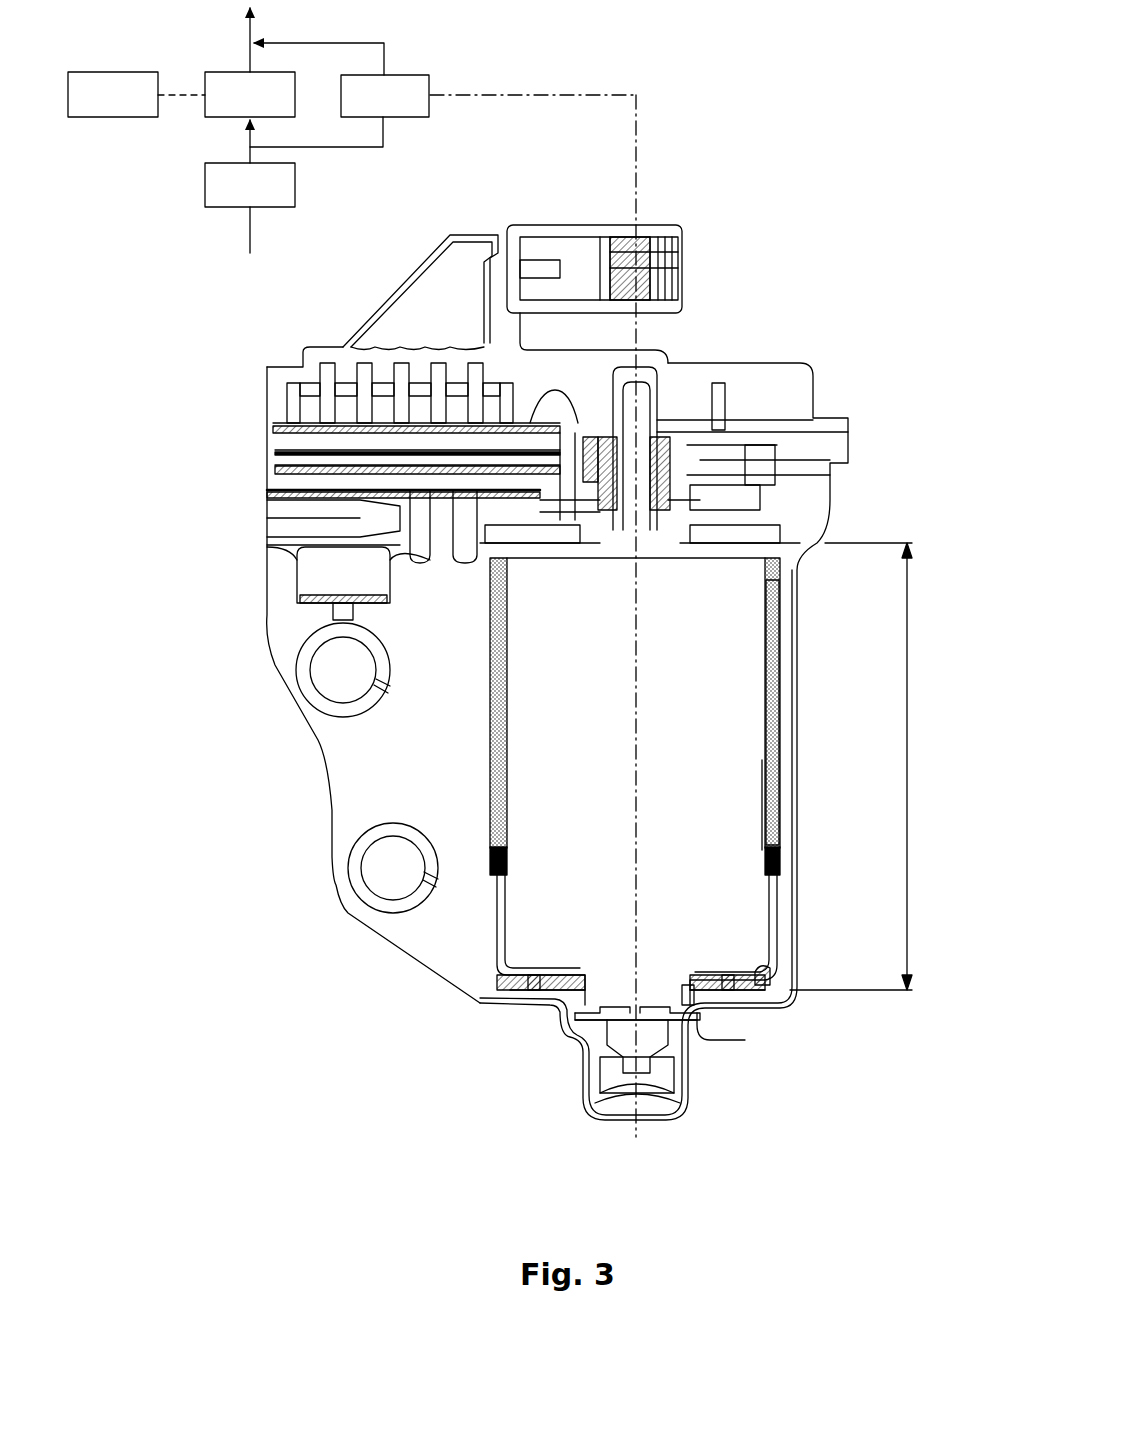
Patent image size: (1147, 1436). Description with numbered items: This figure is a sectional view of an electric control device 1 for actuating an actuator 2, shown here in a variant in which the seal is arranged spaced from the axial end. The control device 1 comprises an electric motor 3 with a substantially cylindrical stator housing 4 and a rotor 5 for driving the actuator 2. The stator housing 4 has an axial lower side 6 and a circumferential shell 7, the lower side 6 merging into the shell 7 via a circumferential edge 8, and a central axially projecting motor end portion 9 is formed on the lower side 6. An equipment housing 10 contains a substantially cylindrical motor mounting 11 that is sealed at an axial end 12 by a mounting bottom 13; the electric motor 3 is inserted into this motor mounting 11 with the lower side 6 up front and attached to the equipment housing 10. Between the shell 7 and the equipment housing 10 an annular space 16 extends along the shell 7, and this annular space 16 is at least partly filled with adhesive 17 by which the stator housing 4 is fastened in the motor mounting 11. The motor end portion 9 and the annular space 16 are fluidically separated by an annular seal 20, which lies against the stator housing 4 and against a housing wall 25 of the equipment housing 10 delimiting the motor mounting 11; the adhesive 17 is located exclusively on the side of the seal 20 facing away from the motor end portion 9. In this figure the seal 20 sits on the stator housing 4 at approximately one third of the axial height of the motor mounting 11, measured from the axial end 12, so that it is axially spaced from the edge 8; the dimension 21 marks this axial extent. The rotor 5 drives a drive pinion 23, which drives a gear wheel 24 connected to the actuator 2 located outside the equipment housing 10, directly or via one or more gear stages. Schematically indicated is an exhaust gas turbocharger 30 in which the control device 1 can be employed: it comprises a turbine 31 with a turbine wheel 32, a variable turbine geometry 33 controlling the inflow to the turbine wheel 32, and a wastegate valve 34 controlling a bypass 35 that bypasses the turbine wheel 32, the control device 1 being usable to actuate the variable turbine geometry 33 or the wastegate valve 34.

The electric control device 1 is at (893, 265).
The actuator 2 is at (380, 685).
The electric motor 3 is at (772, 667).
The stator housing 4 is at (636, 680).
The rotor 5 is at (645, 403).
The axial lower side 6 is at (738, 990).
The circumferential shell 7 is at (732, 750).
The circumferential edge 8 is at (762, 968).
The motor end portion 9 is at (598, 1005).
The equipment housing 10 is at (326, 872).
The motor mounting 11 is at (700, 993).
The axial end 12 is at (540, 975).
The mounting bottom 13 is at (593, 1065).
The annular space 16 is at (775, 928).
The adhesive 17 is at (770, 617).
The annular seal 20 is at (780, 860).
The filter length 21 is at (908, 765).
The drive pinion 23 is at (610, 447).
The gear wheel 24 is at (577, 467).
The housing wall 25 is at (770, 708).
The exhaust gas turbocharger 30 is at (157, 194).
The turbine 31 is at (113, 94).
The turbine wheel 32 is at (250, 94).
The variable turbine geometry 33 is at (250, 185).
The wastegate valve 34 is at (385, 96).
The bypass 35 is at (388, 133).